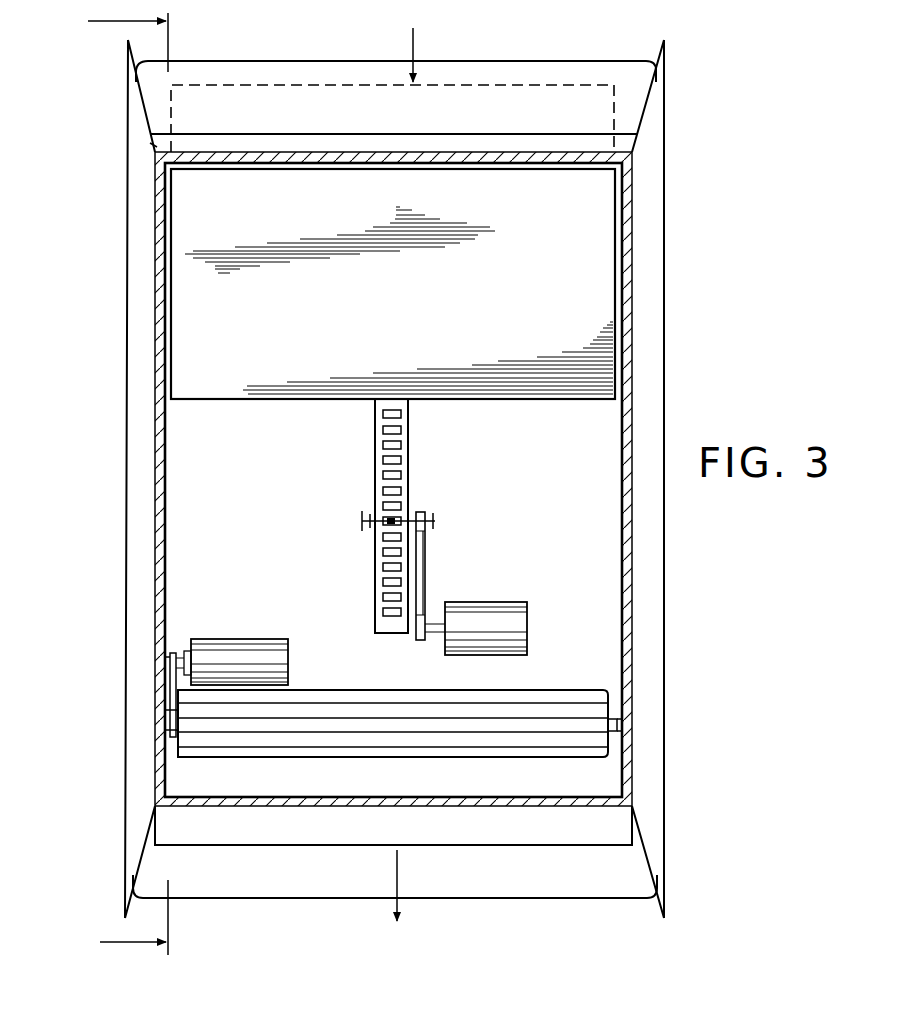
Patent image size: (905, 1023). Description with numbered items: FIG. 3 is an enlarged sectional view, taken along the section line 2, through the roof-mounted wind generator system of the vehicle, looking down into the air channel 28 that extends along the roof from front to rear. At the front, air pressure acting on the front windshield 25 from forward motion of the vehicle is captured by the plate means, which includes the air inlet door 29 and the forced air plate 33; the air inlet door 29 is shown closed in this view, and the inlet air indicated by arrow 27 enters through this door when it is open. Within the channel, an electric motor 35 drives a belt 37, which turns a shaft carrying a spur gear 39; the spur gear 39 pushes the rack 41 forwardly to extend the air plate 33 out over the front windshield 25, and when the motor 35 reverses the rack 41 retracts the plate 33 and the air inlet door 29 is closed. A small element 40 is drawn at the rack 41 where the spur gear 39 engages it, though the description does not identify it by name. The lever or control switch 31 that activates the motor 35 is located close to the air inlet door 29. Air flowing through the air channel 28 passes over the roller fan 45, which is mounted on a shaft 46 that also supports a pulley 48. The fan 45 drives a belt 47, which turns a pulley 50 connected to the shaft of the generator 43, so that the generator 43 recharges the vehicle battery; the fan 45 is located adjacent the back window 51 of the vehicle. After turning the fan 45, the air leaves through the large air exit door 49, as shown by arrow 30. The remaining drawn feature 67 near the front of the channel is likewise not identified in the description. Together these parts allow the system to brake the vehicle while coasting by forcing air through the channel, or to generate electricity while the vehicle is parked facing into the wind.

The section line 2- 2 is at (118, 482).
The front windshield 25 is at (149, 73).
The inlet air arrow 27 is at (416, 42).
The air channel 28 is at (173, 492).
The air inlet door 29 is at (597, 142).
The exit air arrow 30 is at (397, 872).
The lever (control switch) 31 is at (150, 143).
The air plate 33 is at (603, 263).
The electric motor 35 is at (510, 603).
The belt 37 is at (423, 562).
The spur gear 39 is at (433, 520).
The pinion 40 is at (390, 519).
The rack 41 is at (403, 467).
The generator 43 is at (270, 639).
The roller fan 45 is at (586, 697).
The shaft 46 is at (612, 730).
The belt 47 is at (170, 678).
The pulley 48 is at (170, 715).
The air exit door 49 is at (168, 828).
The pulley 50 is at (175, 655).
The back window 51 is at (155, 867).
The compartment 67 is at (171, 99).